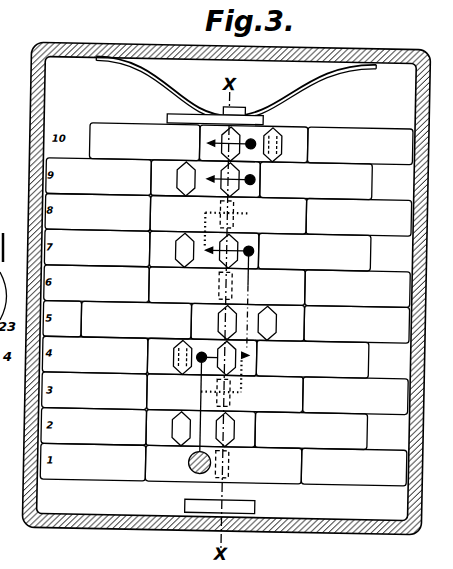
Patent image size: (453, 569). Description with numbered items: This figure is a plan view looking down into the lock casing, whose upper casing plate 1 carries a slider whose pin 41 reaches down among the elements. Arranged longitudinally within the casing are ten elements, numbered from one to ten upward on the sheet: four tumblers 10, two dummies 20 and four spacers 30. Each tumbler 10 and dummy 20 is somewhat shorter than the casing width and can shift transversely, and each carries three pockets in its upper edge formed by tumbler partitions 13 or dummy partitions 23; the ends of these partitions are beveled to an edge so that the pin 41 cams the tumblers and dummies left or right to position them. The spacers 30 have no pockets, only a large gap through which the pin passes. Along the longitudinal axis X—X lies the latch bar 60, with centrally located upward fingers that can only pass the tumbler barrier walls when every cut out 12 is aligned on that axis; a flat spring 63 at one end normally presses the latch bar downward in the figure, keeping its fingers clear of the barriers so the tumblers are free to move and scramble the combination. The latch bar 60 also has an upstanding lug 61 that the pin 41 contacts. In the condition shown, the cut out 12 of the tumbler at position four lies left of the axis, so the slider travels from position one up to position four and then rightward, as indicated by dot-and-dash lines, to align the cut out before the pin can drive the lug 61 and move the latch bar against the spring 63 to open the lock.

The upper casing plate 1 is at (31, 153).
The tumbler 10 is at (334, 252).
The cut out 12 is at (188, 368).
The tumbler partition 13 is at (203, 139).
The dummy 20 is at (332, 378).
The dummy partition 23 is at (174, 424).
The spacer 30 is at (356, 342).
The pin 41 is at (193, 471).
The latch bar 60 is at (243, 489).
The upstanding lug 61 is at (180, 117).
The flat spring 63 is at (312, 88).